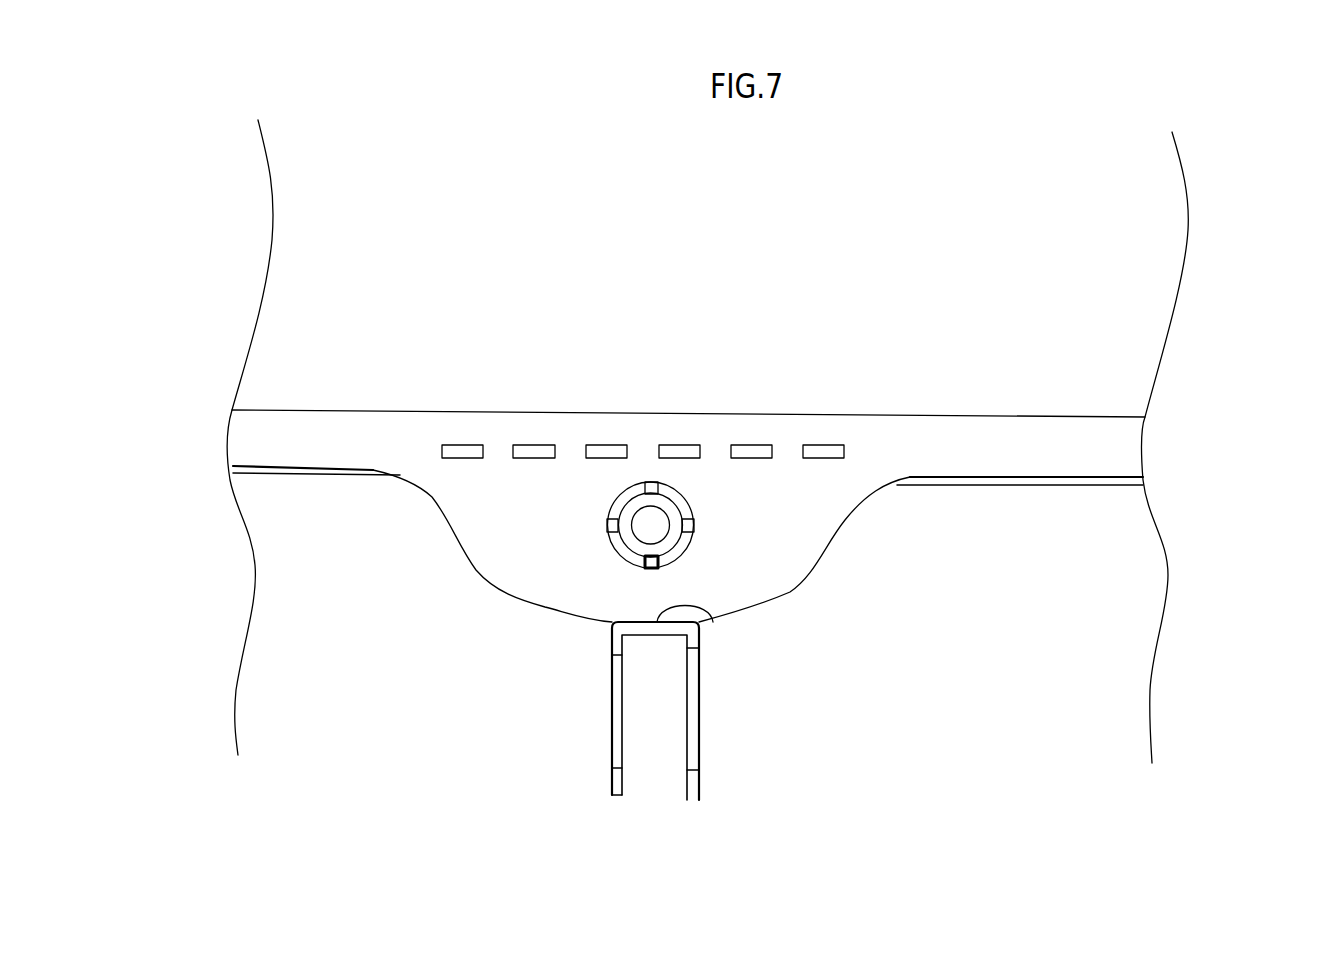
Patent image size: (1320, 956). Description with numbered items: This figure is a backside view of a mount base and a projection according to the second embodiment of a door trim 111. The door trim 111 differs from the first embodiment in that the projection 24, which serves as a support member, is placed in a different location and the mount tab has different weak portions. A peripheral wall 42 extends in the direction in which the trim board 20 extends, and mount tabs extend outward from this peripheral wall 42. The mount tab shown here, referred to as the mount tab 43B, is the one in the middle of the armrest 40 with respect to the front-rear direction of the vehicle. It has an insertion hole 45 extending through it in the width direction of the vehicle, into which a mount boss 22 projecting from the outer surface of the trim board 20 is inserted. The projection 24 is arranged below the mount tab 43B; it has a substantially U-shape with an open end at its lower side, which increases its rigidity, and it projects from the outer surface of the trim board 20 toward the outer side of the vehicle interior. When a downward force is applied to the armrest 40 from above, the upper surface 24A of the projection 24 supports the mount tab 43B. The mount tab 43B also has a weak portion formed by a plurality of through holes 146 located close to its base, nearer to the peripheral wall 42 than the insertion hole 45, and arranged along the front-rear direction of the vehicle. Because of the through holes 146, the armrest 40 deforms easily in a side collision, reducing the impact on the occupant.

The door trim 111 is at (253, 162).
The armrest 40 is at (1156, 283).
The trim board 20 is at (1137, 555).
The peripheral wall 42 is at (928, 450).
The mount tab 43B is at (517, 572).
The through holes 146 is at (603, 452).
The insertion hole 45 is at (683, 498).
The mount boss 22 is at (630, 542).
The upper surface 24A is at (717, 632).
The projection 24 is at (695, 648).